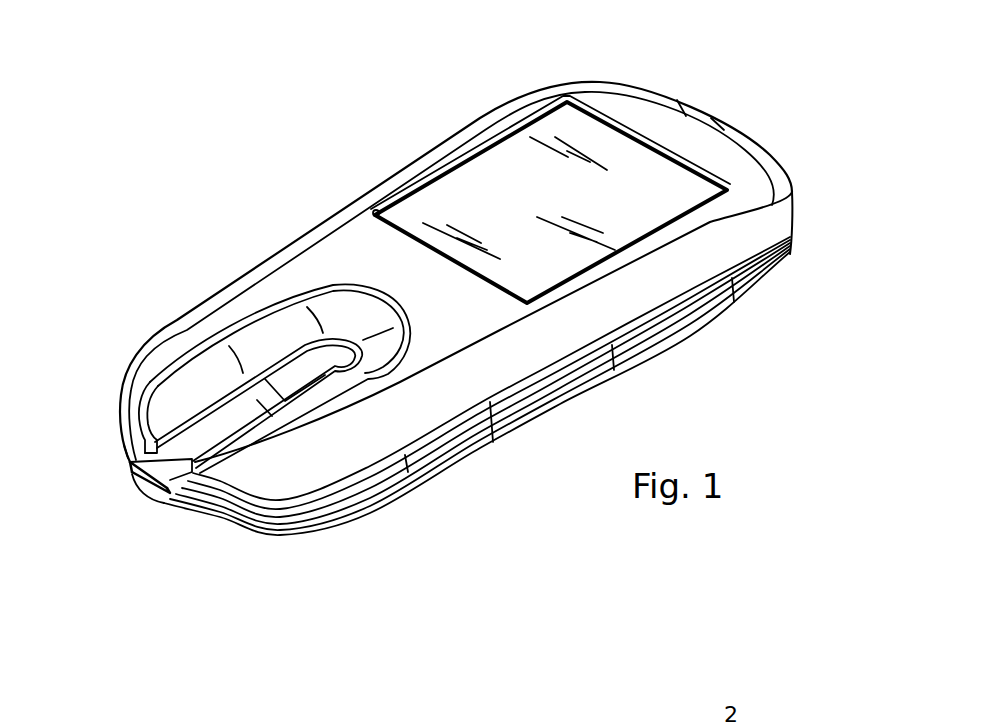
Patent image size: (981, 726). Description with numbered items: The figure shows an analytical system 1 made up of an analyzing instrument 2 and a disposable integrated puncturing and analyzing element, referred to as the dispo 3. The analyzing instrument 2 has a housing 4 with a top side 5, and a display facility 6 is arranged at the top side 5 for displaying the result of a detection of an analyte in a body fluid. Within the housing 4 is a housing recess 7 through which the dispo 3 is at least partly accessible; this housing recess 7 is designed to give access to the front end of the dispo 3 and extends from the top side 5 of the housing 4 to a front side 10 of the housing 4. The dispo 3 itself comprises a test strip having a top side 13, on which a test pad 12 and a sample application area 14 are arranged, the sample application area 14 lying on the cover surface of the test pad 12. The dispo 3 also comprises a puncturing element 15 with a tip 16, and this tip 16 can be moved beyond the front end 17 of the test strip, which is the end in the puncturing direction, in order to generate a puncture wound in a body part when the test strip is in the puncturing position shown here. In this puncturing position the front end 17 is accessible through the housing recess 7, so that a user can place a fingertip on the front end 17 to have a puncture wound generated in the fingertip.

The analytical system 1 is at (250, 157).
The analyzing instrument 2 is at (770, 185).
The dispo 3 is at (188, 474).
The housing 4 is at (675, 293).
The top side 5 is at (636, 105).
The display facility 6 is at (503, 170).
The housing recess 7 is at (272, 358).
The front side 10 is at (121, 443).
The test pad 12 is at (170, 477).
The top side of the test strip 13 is at (233, 423).
The sample application area 14 is at (313, 380).
The puncturing element 15 is at (147, 490).
The tip 16 is at (137, 482).
The front end 17 is at (130, 477).